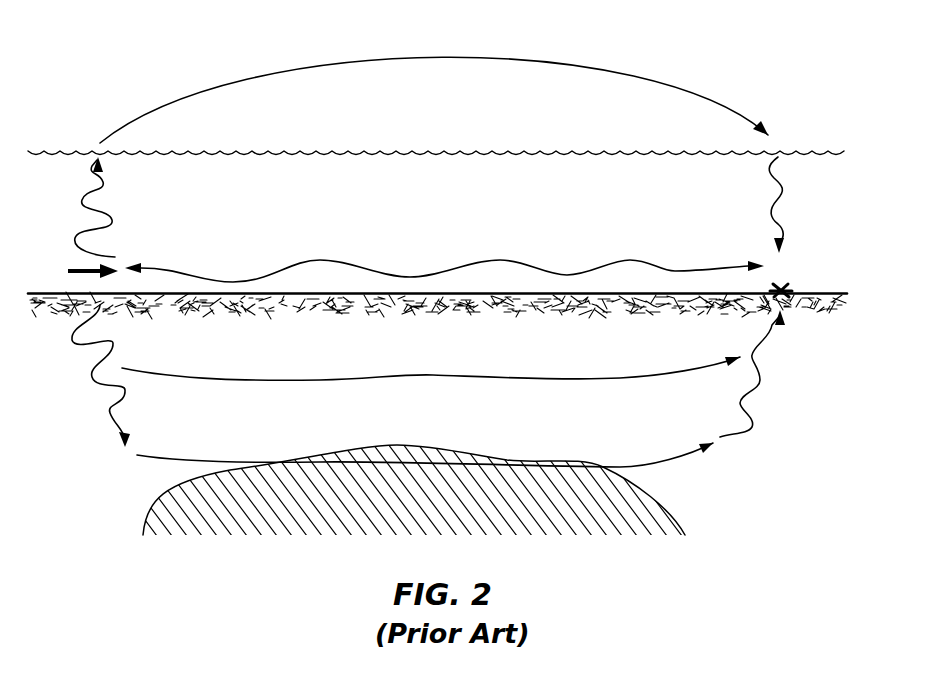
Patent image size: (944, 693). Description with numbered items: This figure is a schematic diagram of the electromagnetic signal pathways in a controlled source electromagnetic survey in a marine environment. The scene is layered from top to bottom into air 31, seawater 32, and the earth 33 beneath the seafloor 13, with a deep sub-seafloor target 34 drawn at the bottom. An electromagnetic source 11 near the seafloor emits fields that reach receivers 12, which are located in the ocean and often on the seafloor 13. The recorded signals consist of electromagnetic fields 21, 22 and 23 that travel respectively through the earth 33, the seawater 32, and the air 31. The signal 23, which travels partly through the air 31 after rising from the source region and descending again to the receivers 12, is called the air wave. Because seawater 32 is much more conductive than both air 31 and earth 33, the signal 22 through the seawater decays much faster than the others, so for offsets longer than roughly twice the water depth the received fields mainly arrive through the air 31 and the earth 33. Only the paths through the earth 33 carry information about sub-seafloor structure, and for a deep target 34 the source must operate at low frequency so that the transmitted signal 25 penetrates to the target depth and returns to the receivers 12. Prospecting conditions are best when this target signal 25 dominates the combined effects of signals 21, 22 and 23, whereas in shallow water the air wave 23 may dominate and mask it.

The electromagnetic source 11 is at (83, 269).
The receivers 12 is at (781, 283).
The seafloor 13 is at (75, 293).
The electromagnetic field 21 is at (669, 372).
The electromagnetic field 22 is at (648, 262).
The electromagnetic field 23 is at (645, 82).
The transmitted electromagnetic signals 25 is at (669, 459).
The air 31 is at (436, 127).
The seawater 32 is at (351, 211).
The earth 33 is at (437, 319).
The target 34 is at (391, 488).